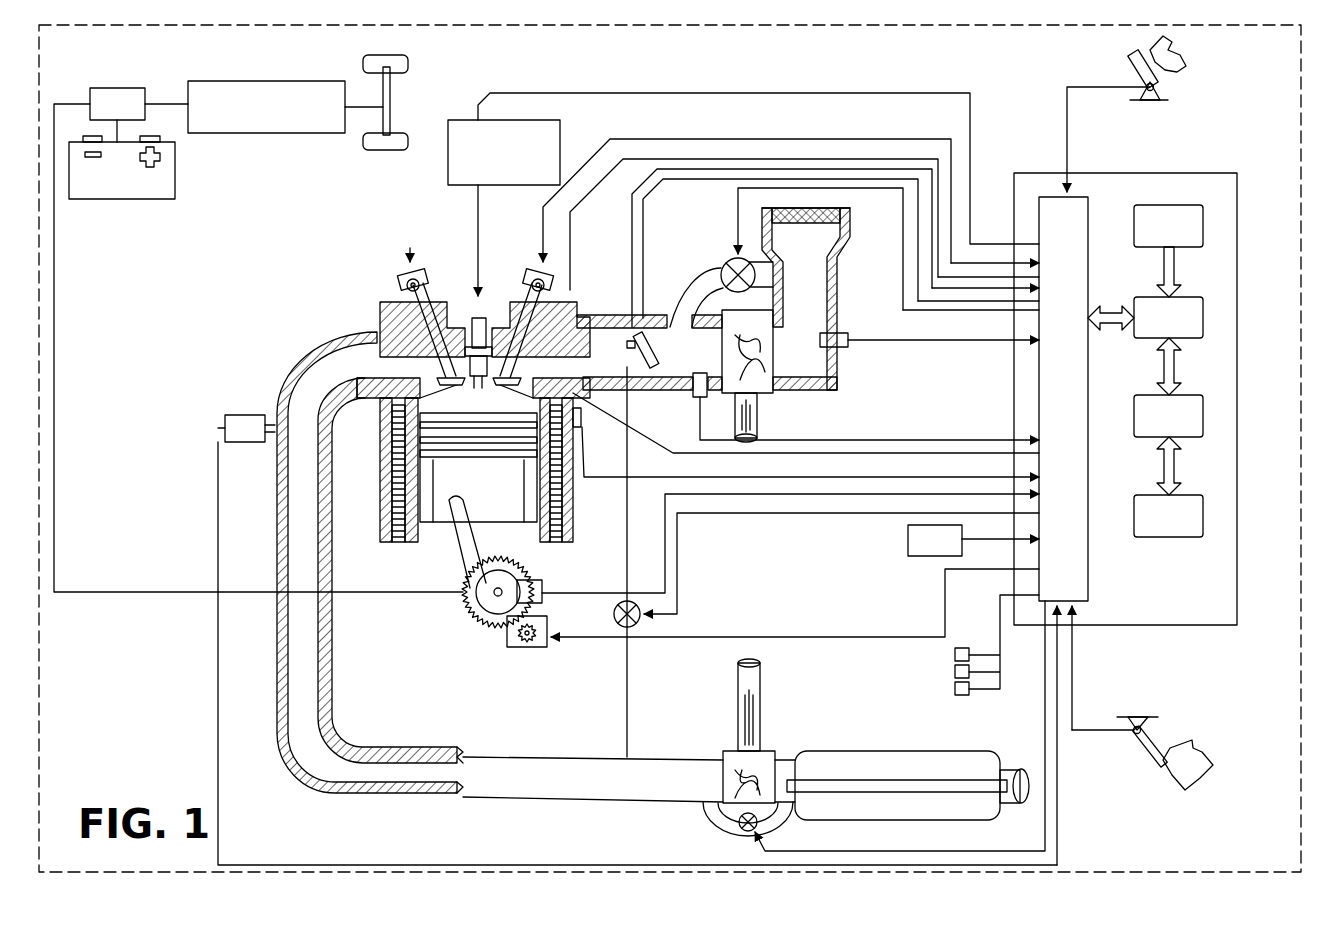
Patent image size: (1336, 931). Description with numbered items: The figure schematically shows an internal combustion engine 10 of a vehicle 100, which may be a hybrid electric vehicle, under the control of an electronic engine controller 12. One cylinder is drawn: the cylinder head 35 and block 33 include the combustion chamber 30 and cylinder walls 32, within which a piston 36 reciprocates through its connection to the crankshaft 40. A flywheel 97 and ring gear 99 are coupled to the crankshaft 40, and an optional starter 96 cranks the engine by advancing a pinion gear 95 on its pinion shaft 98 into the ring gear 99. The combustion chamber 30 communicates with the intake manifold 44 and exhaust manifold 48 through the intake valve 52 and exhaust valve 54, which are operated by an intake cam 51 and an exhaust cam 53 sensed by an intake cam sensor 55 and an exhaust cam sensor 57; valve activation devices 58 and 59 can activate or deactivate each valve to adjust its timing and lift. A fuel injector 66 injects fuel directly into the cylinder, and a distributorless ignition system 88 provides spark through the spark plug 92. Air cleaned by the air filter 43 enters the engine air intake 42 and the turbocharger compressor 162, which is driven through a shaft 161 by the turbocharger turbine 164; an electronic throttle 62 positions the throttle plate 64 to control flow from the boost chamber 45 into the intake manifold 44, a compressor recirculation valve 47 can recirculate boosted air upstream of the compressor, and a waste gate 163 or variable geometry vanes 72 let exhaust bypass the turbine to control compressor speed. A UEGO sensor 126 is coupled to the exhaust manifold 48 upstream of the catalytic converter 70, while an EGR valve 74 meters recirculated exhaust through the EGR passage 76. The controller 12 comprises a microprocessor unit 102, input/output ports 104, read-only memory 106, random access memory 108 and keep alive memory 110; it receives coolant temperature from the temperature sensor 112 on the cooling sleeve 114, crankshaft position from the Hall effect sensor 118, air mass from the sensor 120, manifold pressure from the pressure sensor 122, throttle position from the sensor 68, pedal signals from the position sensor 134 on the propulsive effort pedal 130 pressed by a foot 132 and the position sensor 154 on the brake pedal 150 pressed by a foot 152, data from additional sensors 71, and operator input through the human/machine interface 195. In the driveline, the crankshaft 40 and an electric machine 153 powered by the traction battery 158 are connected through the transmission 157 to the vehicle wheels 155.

The internal combustion engine 10 is at (320, 252).
The electronic engine controller 12 is at (1237, 173).
The combustion chamber 30 is at (475, 470).
The cylinder walls 32 is at (418, 540).
The block 33 is at (376, 448).
The cylinder head 35 is at (378, 300).
The piston 36 is at (457, 530).
The crankshaft 40 is at (478, 622).
The engine air intake 42 is at (722, 228).
The air filter 43 is at (820, 223).
The intake manifold 44 is at (707, 352).
The boost chamber 45 is at (704, 350).
The compressor recirculation valve 47 is at (735, 258).
The exhaust manifold 48 is at (500, 567).
The intake cam 51 is at (532, 272).
The intake valve 52 is at (515, 372).
The exhaust cam 53 is at (420, 272).
The exhaust valve 54 is at (440, 365).
The intake cam sensor 55 is at (549, 293).
The exhaust cam sensor 57 is at (406, 280).
The valve activation device 58 is at (421, 290).
The valve activation device 59 is at (532, 288).
The electronic throttle 62 is at (653, 345).
The throttle plate 64 is at (642, 367).
The fuel injector 66 is at (581, 417).
The throttle position sensor 68 is at (622, 327).
The catalytic converter 70 is at (835, 752).
The additional sensors 71 is at (948, 673).
The variable geometry vanes 72 is at (723, 770).
The EGR valve 74 is at (612, 614).
The EGR passage 76 is at (627, 492).
The distributorless ignition system 88 is at (548, 120).
The spark plug 92 is at (485, 318).
The pinion gear 95 is at (530, 645).
The starter 96 is at (545, 647).
The flywheel 97 is at (476, 600).
The pinion shaft 98 is at (520, 648).
The ring gear 99 is at (490, 628).
The vehicle 100 is at (40, 622).
The microprocessor unit 102 is at (1203, 320).
The input/output ports 104 is at (1088, 205).
The read-only memory 106 is at (1203, 225).
The random access memory 108 is at (1203, 418).
The keep alive memory 110 is at (1203, 518).
The temperature sensor 112 is at (806, 434).
The cooling sleeve 114 is at (555, 520).
The Hall effect sensor 118 is at (542, 582).
The air mass sensor 120 is at (845, 333).
The pressure sensor 122 is at (693, 393).
The UEGO sensor 126 is at (225, 420).
The propulsive effort pedal 130 is at (1132, 66).
The foot 132 is at (1185, 50).
The position sensor 134 is at (1160, 88).
The brake pedal 150 is at (1133, 747).
The foot 152 is at (1192, 742).
The position sensor 154 is at (1130, 718).
The electric machine 153 is at (118, 88).
The vehicle wheels 155 is at (400, 72).
The transmission 157 is at (288, 133).
The traction battery 158 is at (118, 199).
The shaft 161 is at (757, 412).
The turbocharger compressor 162 is at (790, 380).
The waste gate 163 is at (742, 830).
The turbocharger turbine 164 is at (724, 752).
The human/machine interface 195 is at (973, 540).